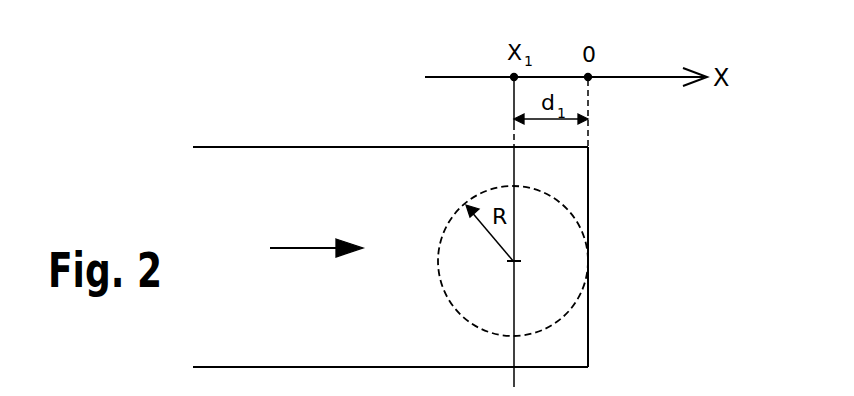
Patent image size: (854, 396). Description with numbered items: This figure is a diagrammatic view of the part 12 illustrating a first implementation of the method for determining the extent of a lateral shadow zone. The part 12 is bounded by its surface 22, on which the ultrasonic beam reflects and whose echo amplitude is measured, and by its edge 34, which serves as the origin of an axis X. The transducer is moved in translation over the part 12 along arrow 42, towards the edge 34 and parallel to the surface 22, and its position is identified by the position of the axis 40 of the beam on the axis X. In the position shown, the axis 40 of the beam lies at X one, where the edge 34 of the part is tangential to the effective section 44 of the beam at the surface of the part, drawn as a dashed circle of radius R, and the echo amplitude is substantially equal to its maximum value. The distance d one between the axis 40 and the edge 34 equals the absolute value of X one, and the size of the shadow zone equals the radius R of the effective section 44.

The part 12 is at (390, 233).
The surface of the part 22 is at (375, 172).
The edge of the part 34 is at (589, 190).
The axis of the beam 40 is at (512, 264).
The arrow 42 is at (310, 248).
The effective section of the beam 44 is at (468, 320).